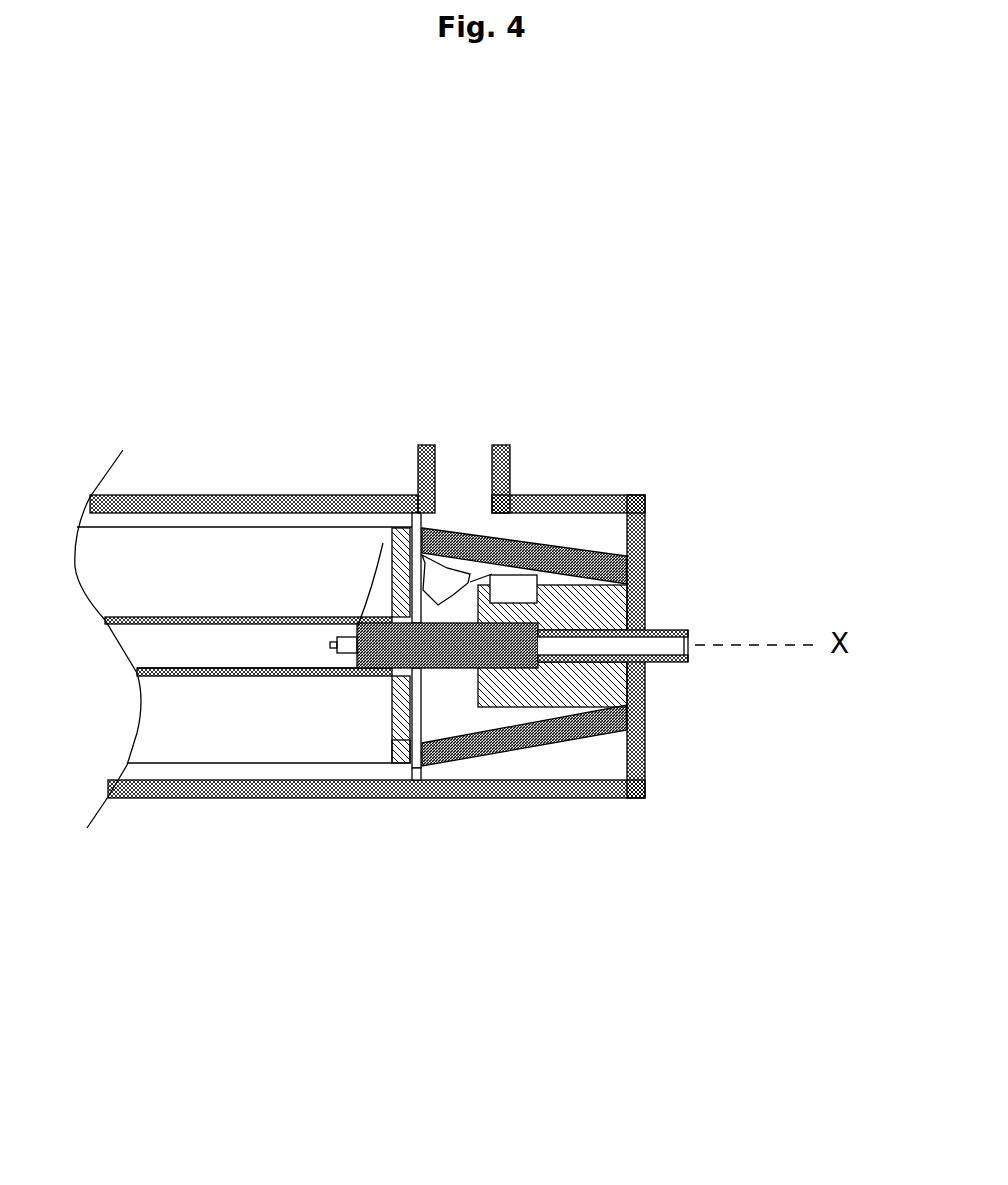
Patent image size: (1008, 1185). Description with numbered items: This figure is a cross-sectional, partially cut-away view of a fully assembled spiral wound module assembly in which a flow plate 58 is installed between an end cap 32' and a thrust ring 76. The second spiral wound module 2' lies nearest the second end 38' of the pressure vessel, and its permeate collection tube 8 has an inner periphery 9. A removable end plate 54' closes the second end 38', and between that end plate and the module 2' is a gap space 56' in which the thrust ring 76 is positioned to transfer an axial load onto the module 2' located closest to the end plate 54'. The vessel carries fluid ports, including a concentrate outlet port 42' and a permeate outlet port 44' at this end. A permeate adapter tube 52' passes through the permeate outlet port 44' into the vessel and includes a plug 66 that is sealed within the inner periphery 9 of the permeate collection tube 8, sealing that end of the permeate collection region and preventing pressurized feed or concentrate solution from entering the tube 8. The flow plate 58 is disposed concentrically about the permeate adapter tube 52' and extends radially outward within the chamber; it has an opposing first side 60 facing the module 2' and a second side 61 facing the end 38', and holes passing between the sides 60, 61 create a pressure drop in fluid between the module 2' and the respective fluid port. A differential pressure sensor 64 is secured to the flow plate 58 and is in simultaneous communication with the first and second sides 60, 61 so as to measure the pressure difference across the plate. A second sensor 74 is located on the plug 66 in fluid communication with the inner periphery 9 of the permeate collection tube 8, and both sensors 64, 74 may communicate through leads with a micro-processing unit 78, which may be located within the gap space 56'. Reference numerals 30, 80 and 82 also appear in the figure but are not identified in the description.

The second spiral wound module 2' is at (246, 619).
The permeate collection tube 8 is at (264, 846).
The inner periphery of permeate collection tube 9 is at (246, 813).
The tube wall piece 30 is at (268, 849).
The end cap 32' is at (335, 790).
The second end 38' is at (655, 555).
The concentrate outlet port 42' is at (531, 402).
The permeate outlet port 44' is at (678, 684).
The permeate adapter tube 52' is at (602, 781).
The removable end plate 54' is at (729, 614).
The gap space 56' is at (445, 813).
The flow plate 58 is at (352, 399).
The first side of flow plate 60 is at (355, 837).
The second side of flow plate 61 is at (470, 886).
The differential pressure sensor 64 is at (341, 428).
The plug 66 is at (321, 462).
The second sensor 74 is at (385, 517).
The thrust ring 76 is at (564, 862).
The micro-processing unit 78 is at (583, 523).
The lever 80 is at (529, 504).
The upper wedge 82 is at (529, 464).